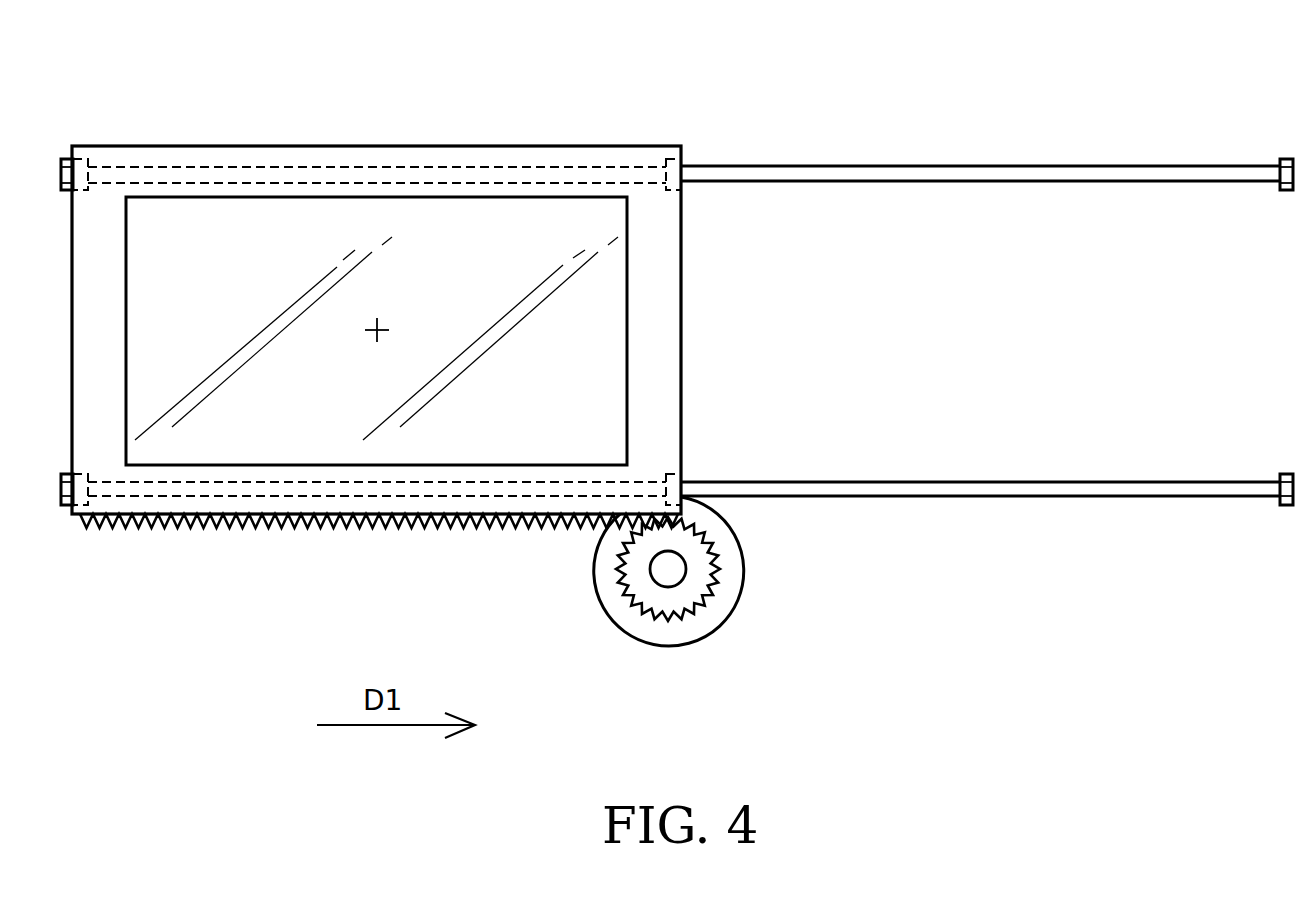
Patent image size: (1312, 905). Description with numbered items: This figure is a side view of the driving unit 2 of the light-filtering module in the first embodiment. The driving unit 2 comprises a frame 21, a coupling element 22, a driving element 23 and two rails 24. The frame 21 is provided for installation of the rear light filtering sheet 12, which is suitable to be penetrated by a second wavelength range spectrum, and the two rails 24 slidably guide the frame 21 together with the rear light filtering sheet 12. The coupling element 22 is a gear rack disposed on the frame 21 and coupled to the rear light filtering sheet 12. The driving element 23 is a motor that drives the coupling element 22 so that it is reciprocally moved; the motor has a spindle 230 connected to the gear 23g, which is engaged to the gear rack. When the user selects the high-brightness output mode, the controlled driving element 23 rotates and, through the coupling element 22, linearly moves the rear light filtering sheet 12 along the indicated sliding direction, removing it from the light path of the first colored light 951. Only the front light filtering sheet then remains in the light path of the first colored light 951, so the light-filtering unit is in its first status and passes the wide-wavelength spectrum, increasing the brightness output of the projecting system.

The driving unit 2 is at (888, 74).
The rear light filtering sheet 12 is at (504, 232).
The first colored light 951 is at (372, 330).
The frame 21 is at (668, 332).
The coupling element 22 is at (420, 530).
The driving element 23 is at (741, 571).
The gear 23g is at (702, 558).
The shaft 230 is at (668, 569).
The rails 24 is at (969, 175).